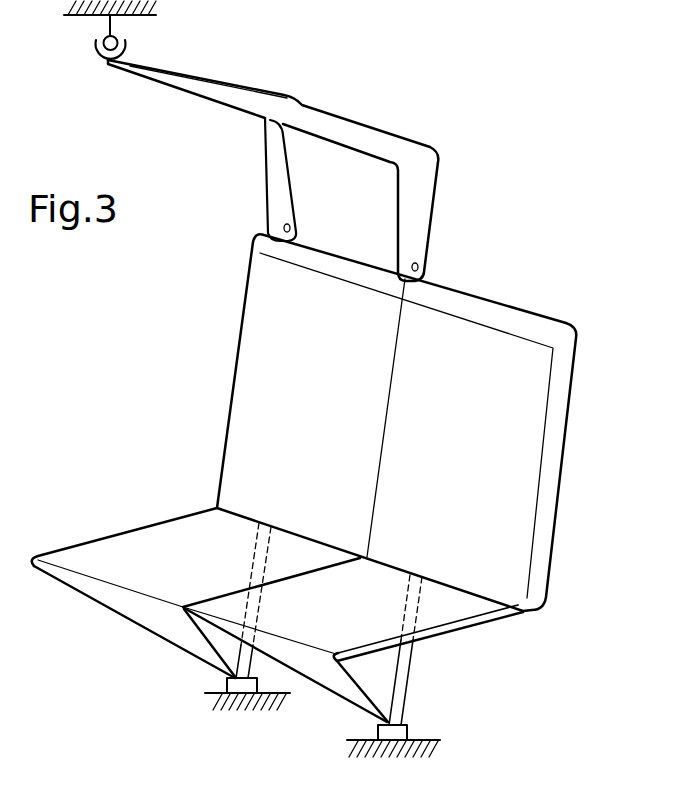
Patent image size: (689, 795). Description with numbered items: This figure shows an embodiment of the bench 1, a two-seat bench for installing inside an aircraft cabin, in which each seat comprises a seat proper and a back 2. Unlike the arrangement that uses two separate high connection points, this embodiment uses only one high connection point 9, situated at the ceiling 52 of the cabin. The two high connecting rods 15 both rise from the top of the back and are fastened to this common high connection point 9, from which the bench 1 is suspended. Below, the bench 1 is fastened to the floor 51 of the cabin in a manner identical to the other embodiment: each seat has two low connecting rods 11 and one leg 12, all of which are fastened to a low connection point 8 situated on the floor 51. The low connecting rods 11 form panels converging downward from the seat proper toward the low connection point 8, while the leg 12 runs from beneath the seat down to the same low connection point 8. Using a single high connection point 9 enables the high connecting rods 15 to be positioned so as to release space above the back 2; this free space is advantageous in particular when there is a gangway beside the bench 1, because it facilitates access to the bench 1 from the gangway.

The bench 1 is at (182, 385).
The backrest 2 is at (515, 493).
The low connection point 8 is at (252, 685).
The high connection point 9 is at (96, 57).
The low connecting rod 11 is at (87, 604).
The leg 12 is at (258, 545).
The high connecting rod 15 is at (266, 92).
The floor 51 is at (207, 699).
The ceiling 52 is at (148, 18).